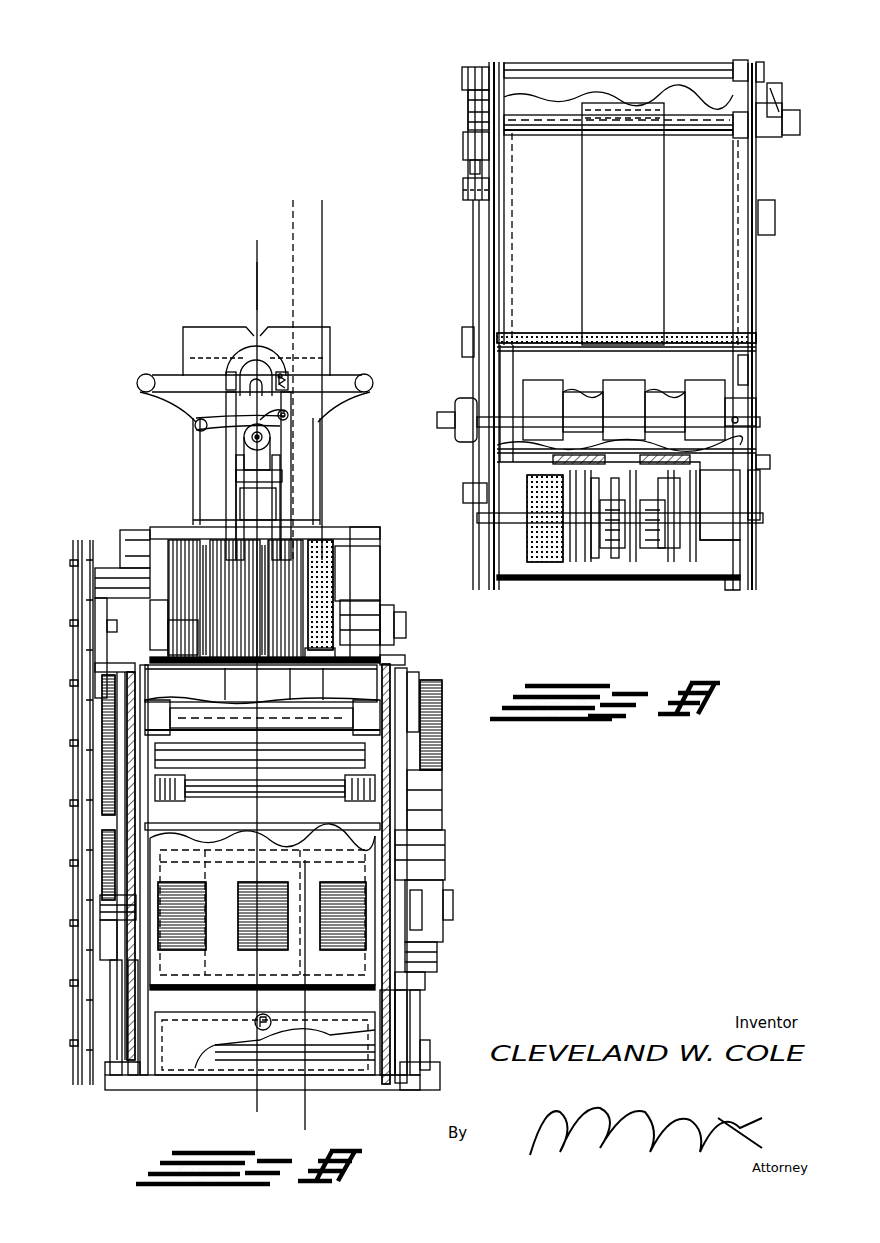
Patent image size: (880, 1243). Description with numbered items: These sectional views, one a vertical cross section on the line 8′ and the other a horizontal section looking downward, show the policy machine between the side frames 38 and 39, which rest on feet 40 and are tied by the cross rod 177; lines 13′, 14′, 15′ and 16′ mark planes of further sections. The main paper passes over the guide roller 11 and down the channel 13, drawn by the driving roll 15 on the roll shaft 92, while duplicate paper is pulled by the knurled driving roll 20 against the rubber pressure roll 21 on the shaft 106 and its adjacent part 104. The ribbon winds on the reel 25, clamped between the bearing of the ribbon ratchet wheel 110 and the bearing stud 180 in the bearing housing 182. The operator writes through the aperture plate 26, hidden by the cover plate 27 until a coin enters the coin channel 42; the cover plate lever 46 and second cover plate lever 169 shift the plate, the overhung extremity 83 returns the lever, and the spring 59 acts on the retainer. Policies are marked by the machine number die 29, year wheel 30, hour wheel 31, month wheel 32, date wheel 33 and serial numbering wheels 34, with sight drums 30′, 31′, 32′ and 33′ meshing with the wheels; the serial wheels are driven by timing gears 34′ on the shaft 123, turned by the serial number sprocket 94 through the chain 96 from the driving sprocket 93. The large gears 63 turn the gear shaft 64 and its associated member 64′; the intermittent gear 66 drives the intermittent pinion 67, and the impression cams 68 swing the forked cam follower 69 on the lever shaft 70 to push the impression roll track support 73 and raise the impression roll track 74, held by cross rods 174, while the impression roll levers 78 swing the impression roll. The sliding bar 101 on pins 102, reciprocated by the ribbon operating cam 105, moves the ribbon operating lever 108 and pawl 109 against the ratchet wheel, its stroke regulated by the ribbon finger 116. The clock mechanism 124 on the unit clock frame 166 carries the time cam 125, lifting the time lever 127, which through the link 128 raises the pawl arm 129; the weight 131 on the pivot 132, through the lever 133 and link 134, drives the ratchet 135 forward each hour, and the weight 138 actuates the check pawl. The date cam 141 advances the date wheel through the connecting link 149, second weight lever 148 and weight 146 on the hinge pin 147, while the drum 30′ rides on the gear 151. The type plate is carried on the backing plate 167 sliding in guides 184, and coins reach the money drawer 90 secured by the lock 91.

In FIG. 8, the section line 8′ is at (300, 256).
In FIG. 8, the section line 13' 13′ is at (290, 962).
In FIG. 8, the section line 14' 14′ is at (310, 228).
In FIG. 8, the section line 15' 15′ is at (272, 308).
In FIG. 8, the section line 16' 16′ is at (302, 264).
In FIG. 9, the guide roller 11 is at (640, 70).
In FIG. 8, the channel 13 is at (352, 858).
In FIG. 8, the driving roll 15 is at (176, 935).
In FIG. 9, the knurled driving roll 20 is at (630, 386).
In FIG. 9, the rubber pressure roll 21 is at (548, 398).
In FIG. 9, the ribbon winding reel 25 is at (674, 138).
In FIG. 8, the aperture plate 26 is at (404, 662).
In FIG. 8, the cover plate 27 is at (402, 652).
In FIG. 8, the machine number die 29 is at (394, 630).
In FIG. 8, the year wheel 30 is at (322, 638).
In FIG. 9, the year wheel 30 is at (686, 580).
In FIG. 8, the year sight drum 30′ is at (300, 578).
In FIG. 9, the year sight drum 30′ is at (665, 580).
In FIG. 8, the hour wheel 31 is at (250, 628).
In FIG. 9, the hour wheel 31 is at (632, 580).
In FIG. 8, the hour sight drum 31′ is at (300, 562).
In FIG. 9, the hour sight drum 31′ is at (640, 580).
In FIG. 8, the month wheel 32 is at (190, 616).
In FIG. 9, the month wheel 32 is at (616, 580).
In FIG. 8, the month sight drum 32′ is at (306, 527).
In FIG. 9, the month sight drum 32′ is at (592, 580).
In FIG. 8, the date wheel 33 is at (208, 672).
In FIG. 9, the date wheel 33 is at (586, 580).
In FIG. 8, the date sight drum 33′ is at (202, 536).
In FIG. 9, the date sight drum 33′ is at (566, 580).
In FIG. 8, the policy serial numbering wheels 34 is at (200, 616).
In FIG. 9, the policy serial numbering wheels 34 is at (556, 580).
In FIG. 8, the timing gears 34′ is at (198, 526).
In FIG. 9, the timing gears 34′ is at (542, 580).
In FIG. 8, the side frame 38 is at (402, 1012).
In FIG. 9, the side frame 38 is at (758, 296).
In FIG. 8, the side frame 39 is at (136, 1010).
In FIG. 9, the side frame 39 is at (490, 262).
In FIG. 8, the feet 40 is at (118, 1085).
In FIG. 8, the coin channel 42 is at (446, 918).
In FIG. 8, the cover plate lever 46 is at (424, 822).
In FIG. 8, the spring 59 is at (422, 988).
In FIG. 8, the large gear 63 is at (136, 716).
In FIG. 8, the gear shaft 64 is at (427, 792).
In FIG. 8, the roller 64′ is at (302, 796).
In FIG. 8, the intermittent gear 66 is at (442, 762).
In FIG. 8, the intermittent pinion 67 is at (437, 966).
In FIG. 8, the impression cams 68 is at (172, 812).
In FIG. 9, the impression cams 68 is at (746, 368).
In FIG. 8, the forked cam follower 69 is at (348, 806).
In FIG. 8, the lever shaft 70 is at (427, 1060).
In FIG. 8, the impression roll track support 73 is at (432, 716).
In FIG. 8, the impression roll track 74 is at (432, 702).
In FIG. 8, the impression roll levers 78 is at (118, 975).
In FIG. 8, the overhung extremity 83 is at (442, 906).
In FIG. 8, the money drawer 90 is at (190, 1062).
In FIG. 8, the lock 91 is at (272, 1022).
In FIG. 8, the roll shaft 92 is at (112, 926).
In FIG. 8, the driving sprocket 93 is at (100, 905).
In FIG. 8, the serial number sprocket 94 is at (80, 600).
In FIG. 8, the chain 96 is at (100, 690).
In FIG. 9, the sliding bar 101 is at (474, 298).
In FIG. 9, the pins 102 is at (468, 190).
In FIG. 9, the shaft 104 is at (480, 440).
In FIG. 9, the ribbon operating cam 105 is at (476, 410).
In FIG. 9, the duplicate driving shaft 106 is at (746, 411).
In FIG. 9, the ribbon operating lever 108 is at (470, 168).
In FIG. 9, the pawl 109 is at (466, 150).
In FIG. 9, the ribbon ratchet wheel 110 is at (470, 108).
In FIG. 9, the ribbon finger 116 is at (598, 245).
In FIG. 8, the shaft 123 is at (116, 545).
In FIG. 9, the shaft 123 is at (466, 522).
In FIG. 8, the clock mechanism 124 is at (316, 470).
In FIG. 8, the time cam 125 is at (270, 436).
In FIG. 8, the time lever 127 is at (208, 420).
In FIG. 8, the link 128 is at (290, 456).
In FIG. 8, the pawl arm 129 is at (346, 526).
In FIG. 8, the weight 131 is at (308, 335).
In FIG. 8, the pivot 132 is at (372, 384).
In FIG. 8, the lever 133 is at (360, 382).
In FIG. 8, the link 134 is at (322, 377).
In FIG. 8, the ratchet 135 is at (316, 675).
In FIG. 8, the weight 138 is at (282, 520).
In FIG. 8, the date cam 141 is at (160, 655).
In FIG. 8, the weight 146 is at (196, 342).
In FIG. 8, the hinge pin 147 is at (137, 382).
In FIG. 8, the second weight lever 148 is at (178, 376).
In FIG. 8, the connecting link 149 is at (232, 445).
In FIG. 8, the gear 151 is at (360, 536).
In FIG. 8, the unit clock frame 166 is at (200, 478).
In FIG. 9, the unit clock frame 166 is at (716, 456).
In FIG. 8, the backing plate 167 is at (302, 730).
In FIG. 9, the backing plate 167 is at (700, 276).
In FIG. 8, the second cover plate lever 169 is at (122, 756).
In FIG. 8, the cross rods 174 is at (236, 730).
In FIG. 8, the cross rod 177 is at (116, 546).
In FIG. 9, the cross rod 177 is at (772, 478).
In FIG. 9, the bearing stud 180 is at (770, 136).
In FIG. 9, the bearing housing 182 is at (786, 90).
In FIG. 9, the guides 184 is at (508, 226).